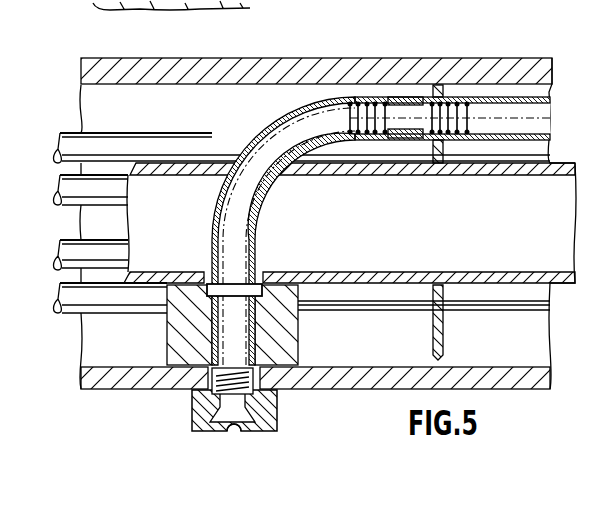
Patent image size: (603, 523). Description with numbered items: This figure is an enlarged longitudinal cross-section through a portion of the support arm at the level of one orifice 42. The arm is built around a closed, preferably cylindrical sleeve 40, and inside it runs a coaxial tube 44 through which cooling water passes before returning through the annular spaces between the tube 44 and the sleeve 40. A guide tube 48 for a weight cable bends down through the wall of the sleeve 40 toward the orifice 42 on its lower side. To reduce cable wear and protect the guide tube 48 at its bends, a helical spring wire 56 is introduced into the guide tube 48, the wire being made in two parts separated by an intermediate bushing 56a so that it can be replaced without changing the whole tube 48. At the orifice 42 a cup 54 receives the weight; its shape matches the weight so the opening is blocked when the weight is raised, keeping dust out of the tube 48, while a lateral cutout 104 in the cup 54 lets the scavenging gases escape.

The closed sleeve 40 is at (259, 62).
The orifice 42 is at (190, 392).
The coaxial tube 44 is at (140, 276).
The guide tube 48 is at (500, 95).
The cup 54 is at (247, 410).
The helical spring wire 56 is at (222, 336).
The intermediate bushing 56a is at (408, 100).
The lateral cutout 104 is at (240, 430).